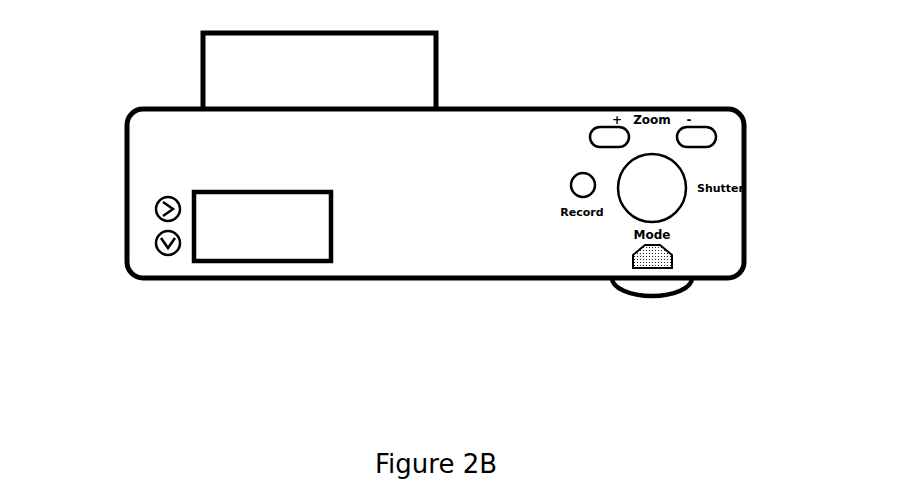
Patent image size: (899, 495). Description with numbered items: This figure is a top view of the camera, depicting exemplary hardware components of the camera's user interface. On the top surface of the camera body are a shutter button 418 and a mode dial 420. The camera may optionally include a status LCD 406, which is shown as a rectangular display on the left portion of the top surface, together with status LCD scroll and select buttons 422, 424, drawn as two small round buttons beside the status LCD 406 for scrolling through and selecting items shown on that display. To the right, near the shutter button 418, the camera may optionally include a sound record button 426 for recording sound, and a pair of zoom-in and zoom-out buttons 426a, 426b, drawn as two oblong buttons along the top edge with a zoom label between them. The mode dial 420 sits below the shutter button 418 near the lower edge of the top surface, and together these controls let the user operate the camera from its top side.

The status LCD 406 is at (302, 260).
The shutter button 418 is at (675, 213).
The mode dial 420 is at (667, 295).
The status LCD scroll button 422 is at (155, 209).
The status LCD select button 424 is at (155, 243).
The sound record button 426 is at (570, 183).
The zoom-in button 426a is at (598, 127).
The zoom-out button 426b is at (707, 127).